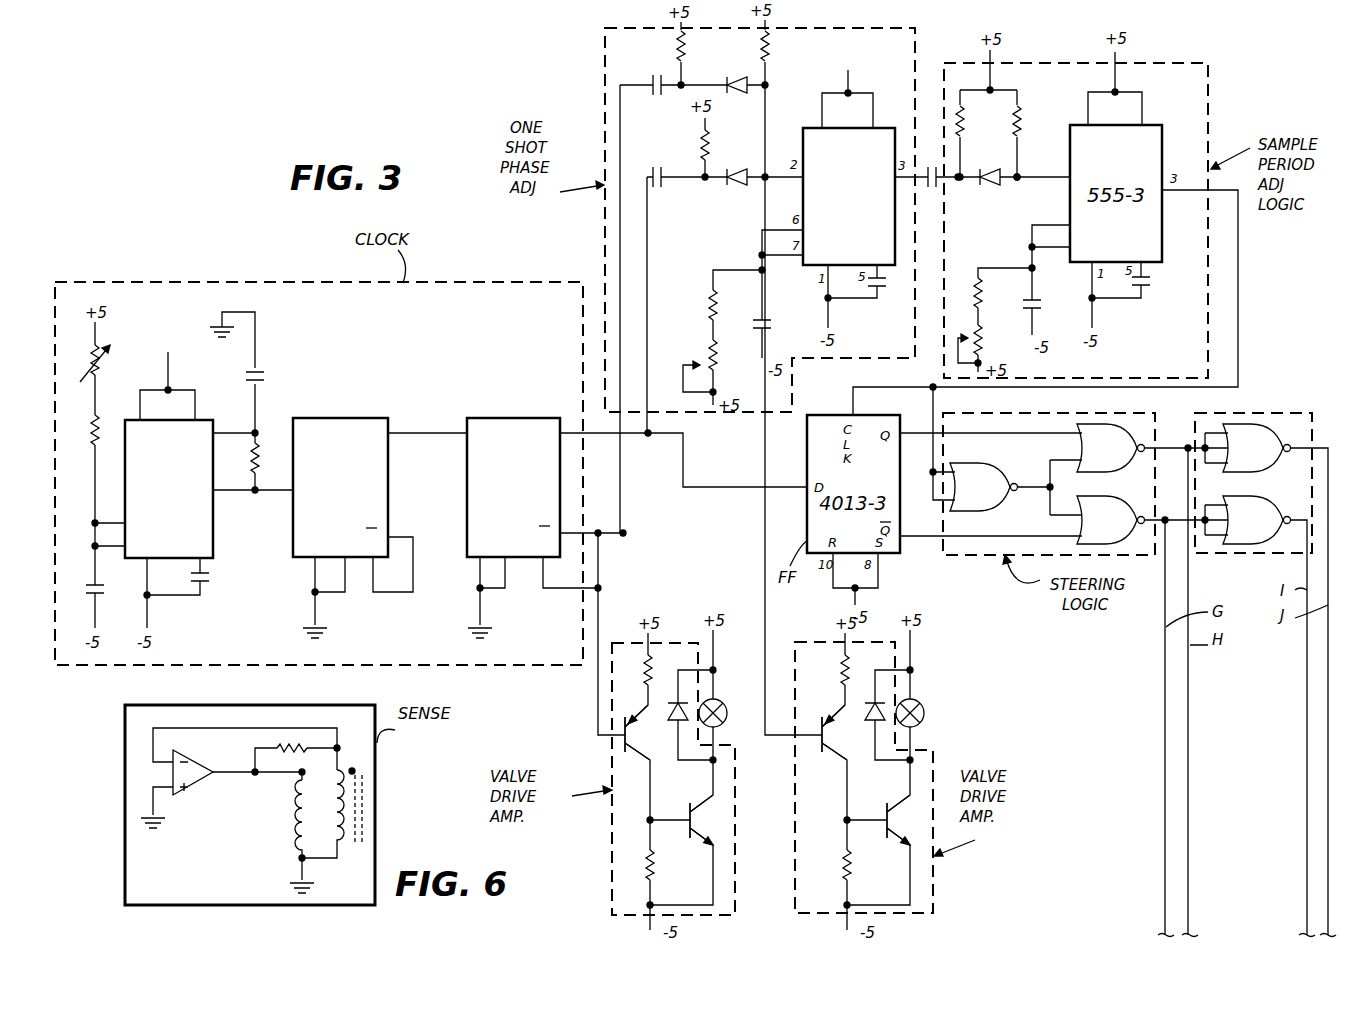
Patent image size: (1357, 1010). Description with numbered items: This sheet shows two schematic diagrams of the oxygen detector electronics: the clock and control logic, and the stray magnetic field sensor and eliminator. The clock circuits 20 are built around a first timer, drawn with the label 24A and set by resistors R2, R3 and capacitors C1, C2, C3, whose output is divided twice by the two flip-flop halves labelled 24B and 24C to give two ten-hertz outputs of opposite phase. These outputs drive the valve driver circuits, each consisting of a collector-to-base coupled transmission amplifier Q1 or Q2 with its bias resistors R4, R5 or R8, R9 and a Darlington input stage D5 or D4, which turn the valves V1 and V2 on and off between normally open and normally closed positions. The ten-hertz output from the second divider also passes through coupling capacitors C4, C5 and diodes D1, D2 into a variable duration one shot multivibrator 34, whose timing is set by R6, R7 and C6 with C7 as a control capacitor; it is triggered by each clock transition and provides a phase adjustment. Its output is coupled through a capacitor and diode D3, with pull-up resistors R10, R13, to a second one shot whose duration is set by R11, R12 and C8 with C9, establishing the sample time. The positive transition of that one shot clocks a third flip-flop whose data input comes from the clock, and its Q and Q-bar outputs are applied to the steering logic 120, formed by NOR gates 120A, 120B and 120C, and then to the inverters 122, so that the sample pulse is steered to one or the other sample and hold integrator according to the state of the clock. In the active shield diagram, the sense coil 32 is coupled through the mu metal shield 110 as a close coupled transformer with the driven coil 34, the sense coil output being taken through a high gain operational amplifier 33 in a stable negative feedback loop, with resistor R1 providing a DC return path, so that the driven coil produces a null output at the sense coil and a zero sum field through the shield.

In FIG. 3, the clock circuits 20 is at (528, 270).
In FIG. 3, the 555 timer 24A is at (169, 456).
In FIG. 3, the first half 4013 flip-flop 24B is at (340, 487).
In FIG. 3, the second half 4013 flip-flop 24C is at (520, 486).
In FIG. 3, the inverters 122 is at (1262, 413).
In FIG. 3, the driven coil 34 is at (803, 131).
In FIG. 6, the driven coil 34 is at (300, 812).
In FIG. 6, the sense coil 32 is at (354, 772).
In FIG. 6, the operational amplifier 33 is at (186, 792).
In FIG. 6, the mu metal shield 110 is at (360, 815).
In FIG. 3, the steering logic 120 is at (1128, 414).
In FIG. 3, the NOR gate 120A is at (984, 487).
In FIG. 3, the NOR gate 120B is at (1111, 448).
In FIG. 3, the NOR gate 120C is at (1111, 520).
In FIG. 6, the feedback resistor R1 is at (292, 730).
In FIG. 3, the adjustable resistor R2 is at (114, 363).
In FIG. 3, the resistor R3 is at (80, 432).
In FIG. 3, the resistor R4 is at (635, 670).
In FIG. 3, the resistor R5 is at (636, 865).
In FIG. 3, the resistor R6 is at (697, 305).
In FIG. 3, the potentiometer R7 is at (726, 360).
In FIG. 3, the resistor R8 is at (831, 670).
In FIG. 3, the resistor R9 is at (832, 865).
In FIG. 3, the resistor R10 is at (977, 121).
In FIG. 3, the resistor R11 is at (995, 293).
In FIG. 3, the potentiometer R12 is at (995, 340).
In FIG. 3, the resistor R13 is at (1034, 121).
In FIG. 3, the capacitor C1 is at (108, 594).
In FIG. 3, the capacitor C2 is at (211, 579).
In FIG. 3, the capacitor C3 is at (268, 379).
In FIG. 3, the capacitor C4 is at (649, 96).
In FIG. 3, the capacitor C5 is at (649, 165).
In FIG. 3, the capacitor C6 is at (775, 326).
In FIG. 3, the capacitor C7 is at (889, 287).
In FIG. 3, the capacitor C8 is at (1044, 305).
In FIG. 3, the capacitor C9 is at (1153, 286).
In FIG. 3, the diode D1 is at (738, 71).
In FIG. 3, the diode D2 is at (738, 162).
In FIG. 3, the diode D3 is at (992, 189).
In FIG. 3, the Darlington transistor D4 is at (839, 732).
In FIG. 3, the Darlington transistor D5 is at (642, 732).
In FIG. 3, the transmission amplifier Q1 is at (707, 820).
In FIG. 3, the transmission amplifier Q2 is at (904, 820).
In FIG. 3, the valve V1 is at (726, 713).
In FIG. 3, the valve V2 is at (923, 713).